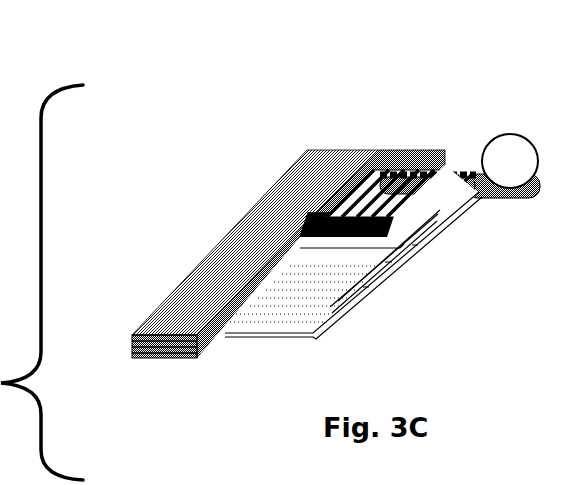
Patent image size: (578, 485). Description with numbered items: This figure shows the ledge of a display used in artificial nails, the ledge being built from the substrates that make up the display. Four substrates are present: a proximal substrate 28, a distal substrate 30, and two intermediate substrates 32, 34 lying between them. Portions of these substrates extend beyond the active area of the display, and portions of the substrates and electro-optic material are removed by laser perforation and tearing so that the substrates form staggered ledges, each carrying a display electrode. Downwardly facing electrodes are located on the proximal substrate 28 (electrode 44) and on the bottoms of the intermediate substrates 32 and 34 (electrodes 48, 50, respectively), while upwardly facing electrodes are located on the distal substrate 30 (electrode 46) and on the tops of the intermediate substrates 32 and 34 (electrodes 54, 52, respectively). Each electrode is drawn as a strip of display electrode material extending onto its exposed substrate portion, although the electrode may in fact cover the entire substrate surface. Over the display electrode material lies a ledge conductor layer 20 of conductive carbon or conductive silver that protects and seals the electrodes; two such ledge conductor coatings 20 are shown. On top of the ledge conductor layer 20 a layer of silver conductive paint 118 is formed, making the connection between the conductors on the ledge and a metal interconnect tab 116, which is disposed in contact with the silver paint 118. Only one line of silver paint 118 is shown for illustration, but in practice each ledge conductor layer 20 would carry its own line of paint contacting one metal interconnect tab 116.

The ledge conductor layer 20 is at (438, 174).
The proximal substrate 28 is at (131, 336).
The distal substrate 30 is at (131, 356).
The intermediate substrate 32 is at (131, 341).
The intermediate substrate 34 is at (131, 348).
The electrode 44 is at (243, 317).
The electrode 46 is at (370, 180).
The electrode 48 is at (268, 298).
The electrode 50 is at (292, 275).
The electrode 52 is at (352, 205).
The electrode 54 is at (335, 222).
The metal interconnect tab 116 is at (510, 150).
The silver conductive paint 118 is at (468, 182).